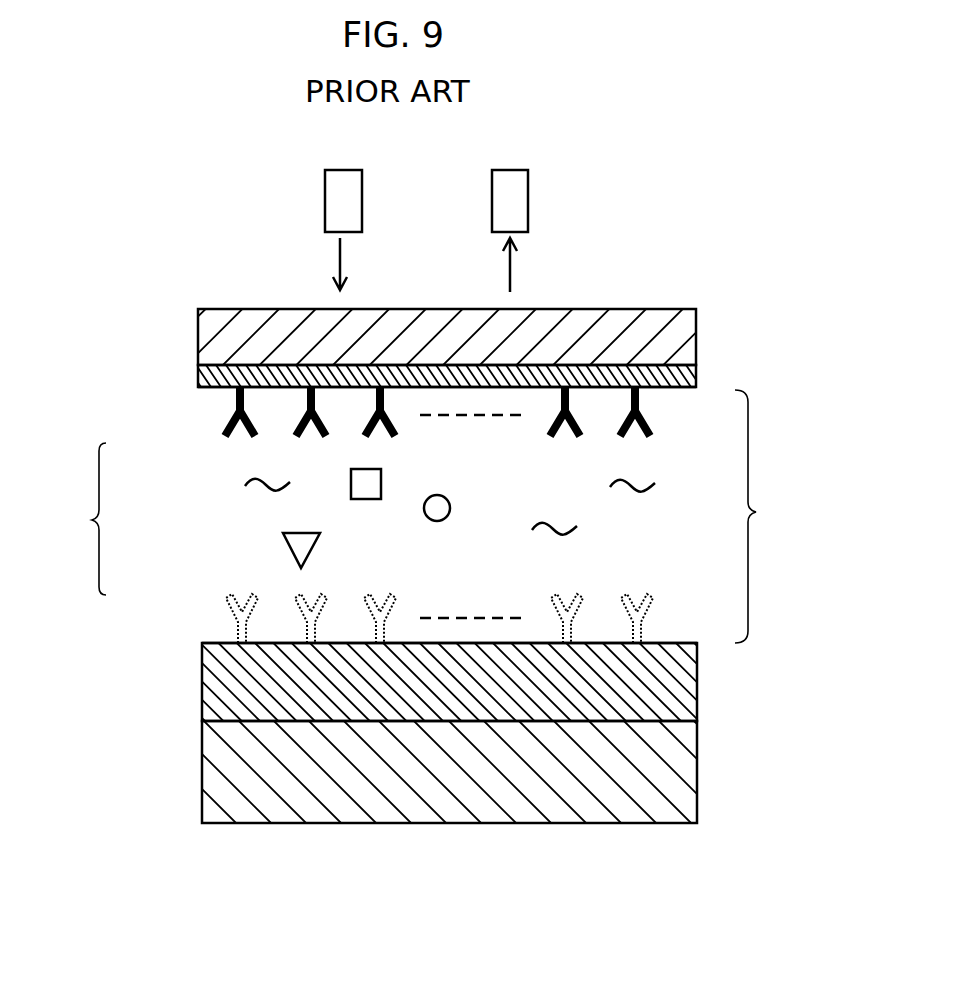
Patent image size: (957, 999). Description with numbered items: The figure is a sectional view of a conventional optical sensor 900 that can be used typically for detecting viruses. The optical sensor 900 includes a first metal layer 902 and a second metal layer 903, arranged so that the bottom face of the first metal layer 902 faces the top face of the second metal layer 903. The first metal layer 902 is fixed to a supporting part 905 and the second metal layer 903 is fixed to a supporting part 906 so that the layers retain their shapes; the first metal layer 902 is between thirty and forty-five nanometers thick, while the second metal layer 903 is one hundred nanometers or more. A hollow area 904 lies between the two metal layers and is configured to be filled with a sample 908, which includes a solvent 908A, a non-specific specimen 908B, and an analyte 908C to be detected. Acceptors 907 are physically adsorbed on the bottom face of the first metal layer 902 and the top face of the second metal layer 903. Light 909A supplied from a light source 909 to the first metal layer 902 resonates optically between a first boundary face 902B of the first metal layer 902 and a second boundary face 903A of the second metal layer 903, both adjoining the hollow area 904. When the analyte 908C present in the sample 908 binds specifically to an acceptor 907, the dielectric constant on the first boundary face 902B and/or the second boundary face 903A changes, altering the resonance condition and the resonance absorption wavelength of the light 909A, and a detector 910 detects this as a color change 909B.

The optical sensor 900 is at (756, 238).
The first metal layer 902 is at (686, 376).
The first boundary face 902B is at (213, 387).
The second metal layer 903 is at (683, 697).
The second boundary face 903A is at (213, 643).
The hollow area 904 is at (771, 516).
The supporting part 905 is at (683, 330).
The supporting part 906 is at (683, 786).
The acceptor 907 is at (653, 437).
The sample 908 is at (353, 519).
The solvent 908A is at (248, 483).
The non-specific specimen 908B is at (424, 513).
The analyte 908C is at (290, 550).
The light source 909 is at (325, 200).
The light 909A is at (340, 257).
The color change 909B is at (510, 272).
The detector 910 is at (492, 200).